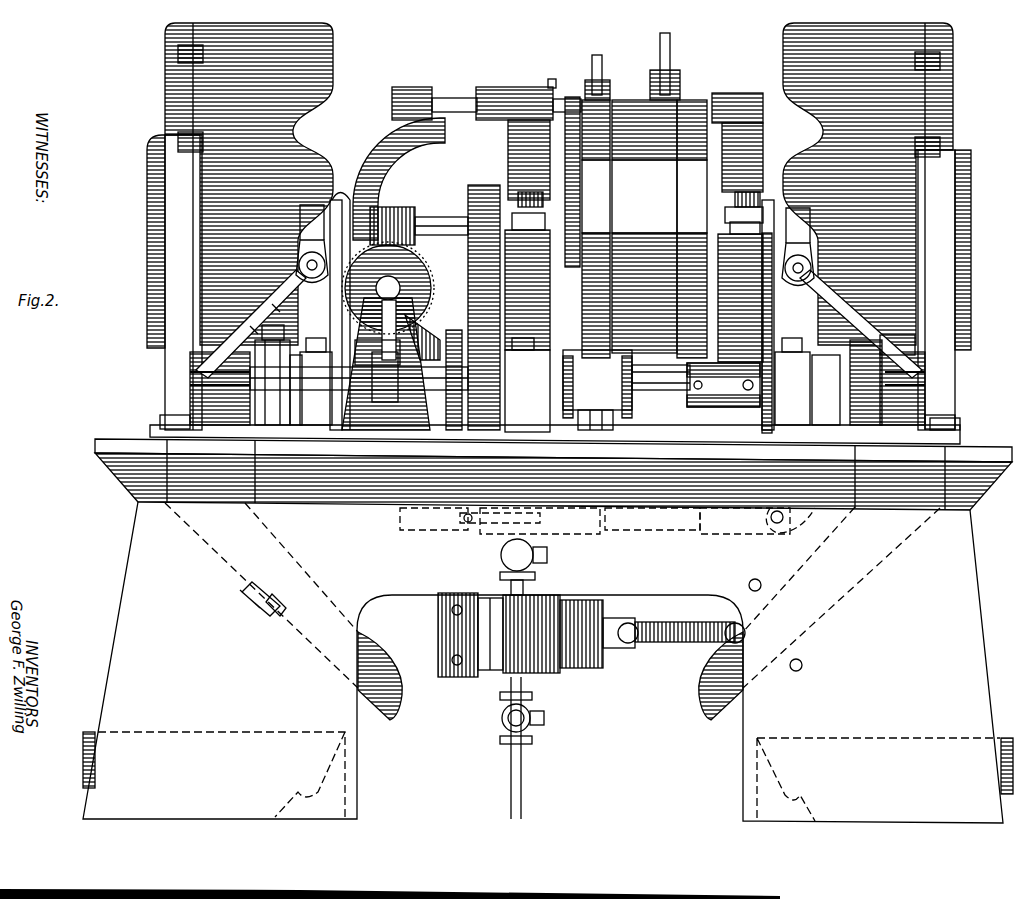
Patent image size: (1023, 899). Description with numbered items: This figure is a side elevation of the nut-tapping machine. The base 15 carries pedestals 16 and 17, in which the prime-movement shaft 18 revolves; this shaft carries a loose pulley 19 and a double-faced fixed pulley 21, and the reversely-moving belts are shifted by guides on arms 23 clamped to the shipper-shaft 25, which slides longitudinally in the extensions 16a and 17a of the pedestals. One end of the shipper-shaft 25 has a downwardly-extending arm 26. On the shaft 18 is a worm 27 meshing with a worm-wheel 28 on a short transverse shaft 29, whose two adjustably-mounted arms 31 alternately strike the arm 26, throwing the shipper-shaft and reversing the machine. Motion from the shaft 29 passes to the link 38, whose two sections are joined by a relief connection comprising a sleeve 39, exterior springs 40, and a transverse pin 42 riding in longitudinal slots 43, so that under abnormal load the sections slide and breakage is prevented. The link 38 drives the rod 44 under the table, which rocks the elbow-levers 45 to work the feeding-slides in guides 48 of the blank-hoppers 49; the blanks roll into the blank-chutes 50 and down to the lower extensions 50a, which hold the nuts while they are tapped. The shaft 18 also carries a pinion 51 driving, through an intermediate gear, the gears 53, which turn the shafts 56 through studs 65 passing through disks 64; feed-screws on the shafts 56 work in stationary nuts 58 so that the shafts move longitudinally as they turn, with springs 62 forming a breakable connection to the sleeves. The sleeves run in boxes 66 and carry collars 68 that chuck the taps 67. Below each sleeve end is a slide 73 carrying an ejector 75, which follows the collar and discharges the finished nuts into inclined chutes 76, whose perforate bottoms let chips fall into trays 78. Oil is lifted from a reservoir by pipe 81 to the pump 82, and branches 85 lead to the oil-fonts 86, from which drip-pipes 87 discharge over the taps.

The base 15 is at (970, 550).
The pedestal 16 is at (548, 292).
The extension of pedestal 16a is at (510, 160).
The pedestal 17 is at (765, 320).
The extension of pedestal 17a is at (758, 157).
The prime-movement shaft 18 is at (435, 220).
The loose pulley 19 is at (644, 229).
The fixed pulley 21 is at (644, 226).
The arm 23 is at (592, 65).
The shipper-shaft 25 is at (455, 98).
The downwardly-extending arm 26 is at (378, 150).
The worm 27 is at (395, 207).
The worm-wheel 28 is at (428, 285).
The transverse shaft 29 is at (430, 302).
The adjustably-mounted arm 31 is at (364, 260).
The link 38 is at (427, 530).
The sleeve 39 is at (588, 528).
The spring 40 is at (490, 534).
The transverse pin 42 is at (465, 527).
The longitudinal slot 43 is at (540, 542).
The rod 44 is at (722, 534).
The elbow-lever 45 is at (800, 516).
The guide 48 is at (176, 55).
The blank-hopper 49 is at (330, 65).
The blank-chute 50 is at (174, 262).
The lower extension of chute 50a is at (185, 377).
The pinion 51 is at (472, 192).
The gear 53 is at (495, 407).
The shaft 56 is at (660, 390).
The stationary nut 58 is at (628, 410).
The spring 62 is at (712, 396).
The disk 64 is at (452, 432).
The stud 65 is at (425, 427).
The box 66 is at (315, 425).
The tap 67 is at (912, 425).
The collar 68 is at (272, 425).
The slide 73 is at (295, 425).
The ejector 75 is at (955, 422).
The inclined chute 76 is at (225, 537).
The tray 78 is at (202, 740).
The pipe 81 is at (523, 762).
The pump 82 is at (475, 676).
The branch 85 is at (330, 320).
The oil-font 86 is at (345, 156).
The drip-pipe 87 is at (213, 347).